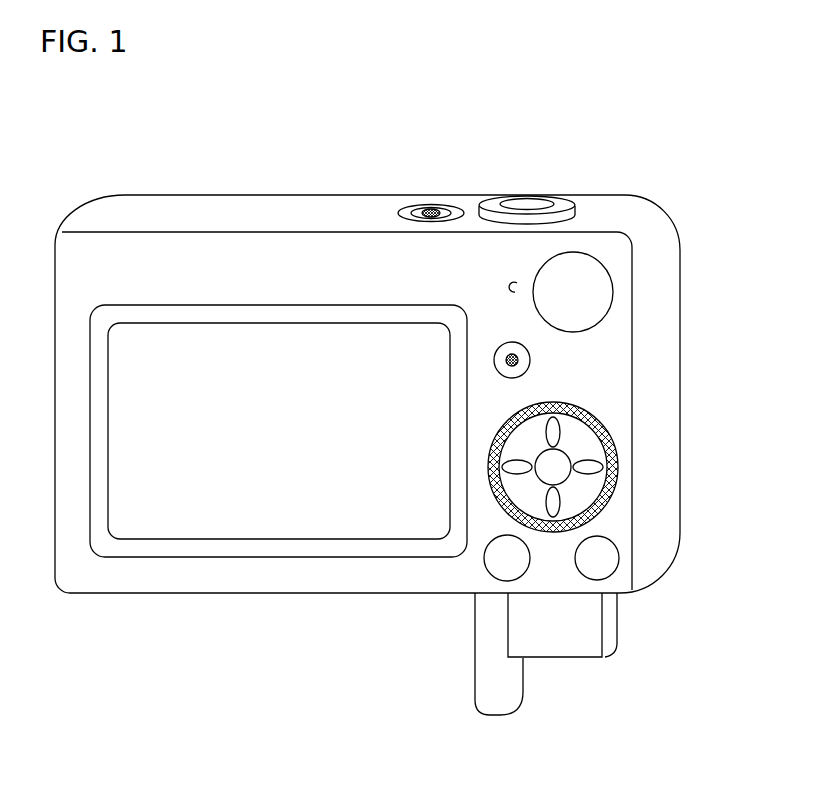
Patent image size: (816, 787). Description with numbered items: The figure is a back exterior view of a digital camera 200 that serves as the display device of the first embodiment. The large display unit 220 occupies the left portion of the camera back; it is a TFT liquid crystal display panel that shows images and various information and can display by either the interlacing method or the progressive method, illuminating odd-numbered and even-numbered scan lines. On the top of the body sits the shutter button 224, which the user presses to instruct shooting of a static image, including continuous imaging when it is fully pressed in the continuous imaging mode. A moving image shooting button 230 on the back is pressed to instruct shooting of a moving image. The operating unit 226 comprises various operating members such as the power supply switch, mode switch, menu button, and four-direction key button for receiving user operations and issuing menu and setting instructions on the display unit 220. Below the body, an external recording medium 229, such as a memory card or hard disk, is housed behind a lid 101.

The digital camera 200 is at (635, 197).
The display unit 220 is at (181, 352).
The shutter button 224 is at (538, 202).
The operating unit 226 is at (440, 222).
The external recording medium 229 is at (570, 632).
The moving image shooting button 230 is at (500, 343).
The lid 101 is at (528, 692).